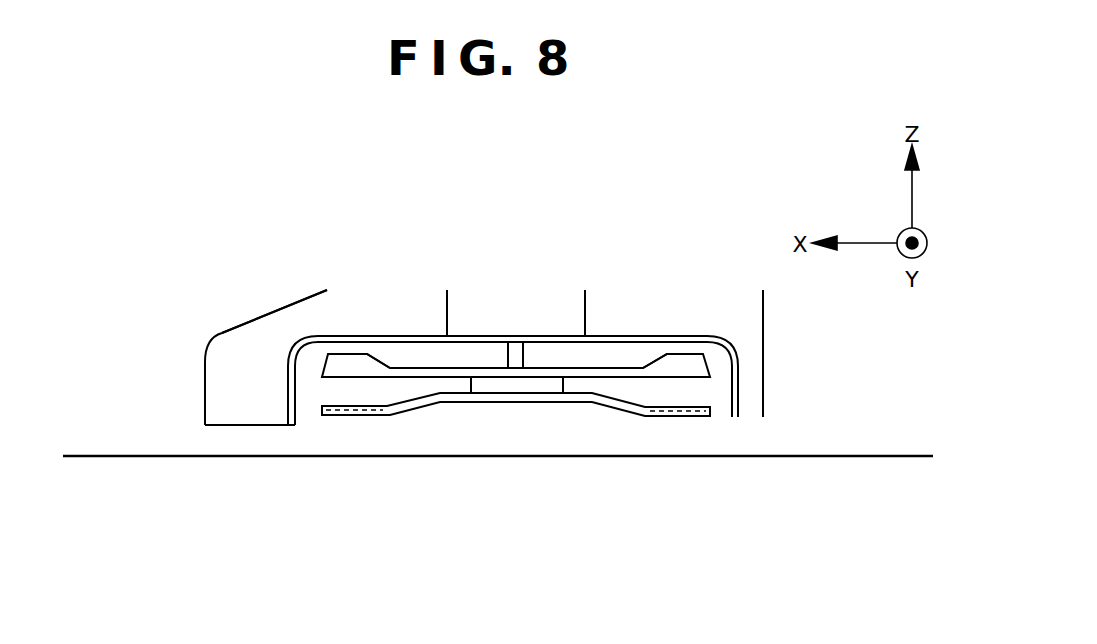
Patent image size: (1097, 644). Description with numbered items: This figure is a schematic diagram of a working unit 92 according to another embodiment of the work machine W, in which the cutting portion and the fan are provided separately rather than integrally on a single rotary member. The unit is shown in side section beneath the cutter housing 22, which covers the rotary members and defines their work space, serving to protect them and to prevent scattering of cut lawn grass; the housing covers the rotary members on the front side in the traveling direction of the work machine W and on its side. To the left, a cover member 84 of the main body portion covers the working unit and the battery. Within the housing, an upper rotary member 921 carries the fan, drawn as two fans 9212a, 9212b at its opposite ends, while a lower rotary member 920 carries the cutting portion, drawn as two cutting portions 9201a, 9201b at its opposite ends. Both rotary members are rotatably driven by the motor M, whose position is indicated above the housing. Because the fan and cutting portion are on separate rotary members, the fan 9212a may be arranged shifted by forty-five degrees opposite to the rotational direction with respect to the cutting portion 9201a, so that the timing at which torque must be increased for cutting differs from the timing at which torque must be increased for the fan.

The cutter housing 22 is at (733, 353).
The cover member 84 is at (212, 343).
The working unit 92 is at (343, 425).
The rotary member 920 is at (630, 412).
The rotary member 921 is at (413, 368).
The cutting portion 9201a is at (363, 420).
The cutting portion 9201b is at (688, 415).
The fan 9212a is at (353, 354).
The fan 9212b is at (678, 353).
The work machine W is at (255, 290).
The motor M is at (587, 308).